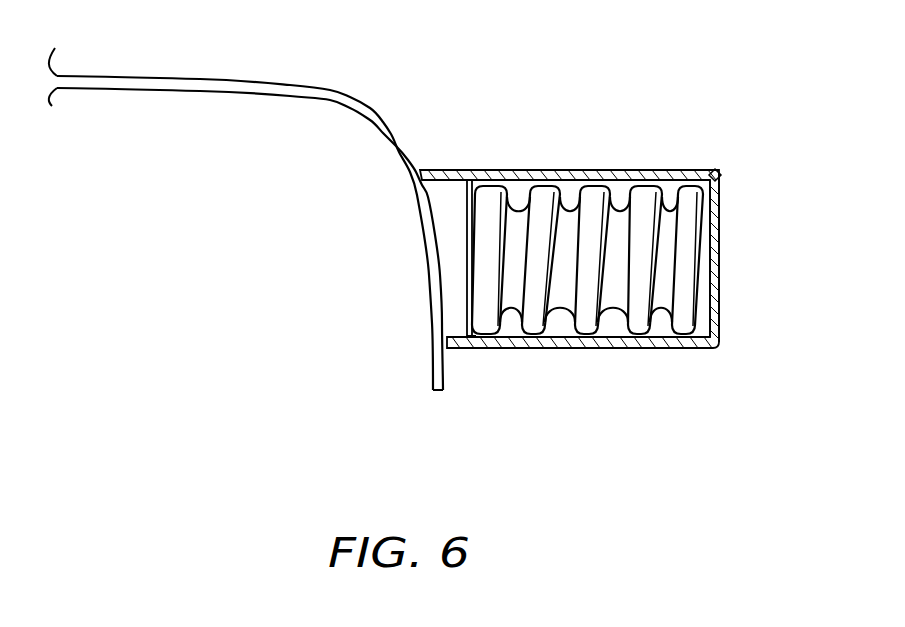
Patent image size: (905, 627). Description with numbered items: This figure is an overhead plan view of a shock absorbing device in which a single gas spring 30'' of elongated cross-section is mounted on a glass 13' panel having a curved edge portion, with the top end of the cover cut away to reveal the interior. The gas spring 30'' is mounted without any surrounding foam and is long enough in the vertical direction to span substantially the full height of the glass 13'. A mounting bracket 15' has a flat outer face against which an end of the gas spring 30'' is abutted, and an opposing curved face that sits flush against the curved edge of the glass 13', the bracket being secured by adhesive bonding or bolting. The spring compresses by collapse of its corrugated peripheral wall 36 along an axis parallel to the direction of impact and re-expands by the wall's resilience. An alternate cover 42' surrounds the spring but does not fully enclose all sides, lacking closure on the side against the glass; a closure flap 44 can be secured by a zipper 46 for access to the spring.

The glass 13' is at (246, 219).
The mounting bracket 15' is at (477, 220).
The cover 42' is at (569, 213).
The gas spring 30'' is at (587, 264).
The corrugated peripheral wall 36 is at (593, 321).
The closure flap 44 is at (718, 272).
The zipper 46 is at (715, 172).